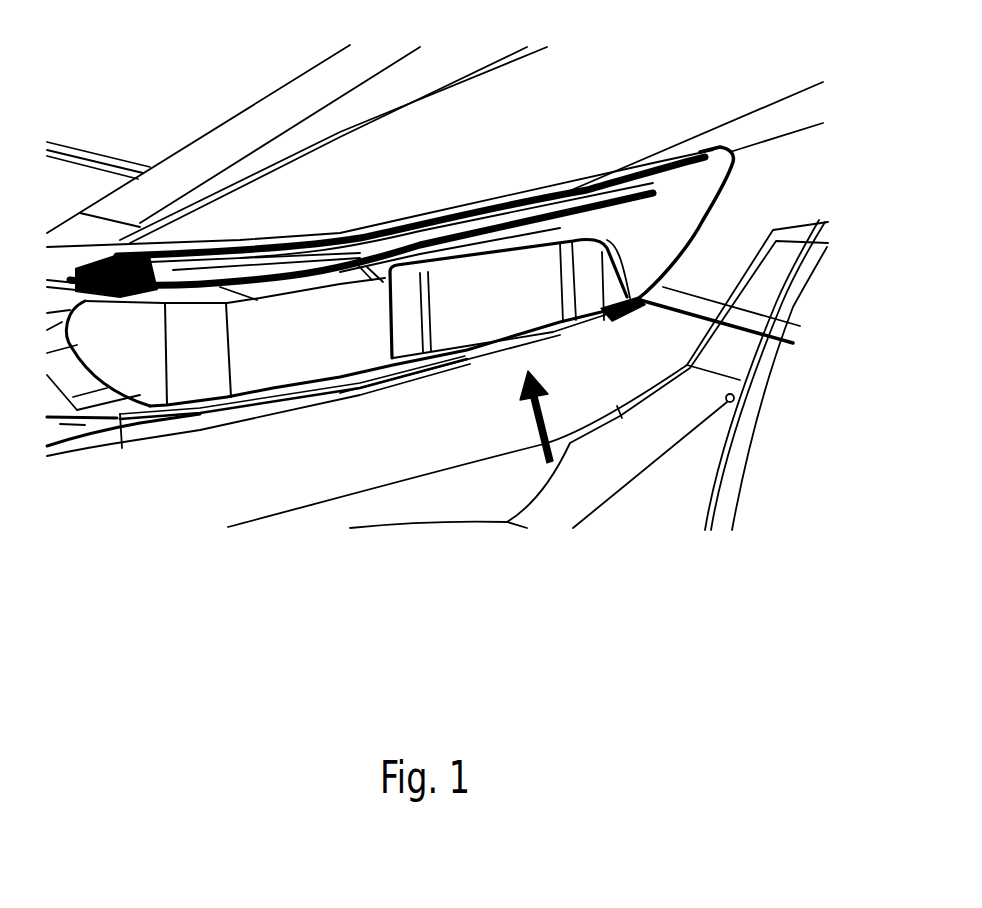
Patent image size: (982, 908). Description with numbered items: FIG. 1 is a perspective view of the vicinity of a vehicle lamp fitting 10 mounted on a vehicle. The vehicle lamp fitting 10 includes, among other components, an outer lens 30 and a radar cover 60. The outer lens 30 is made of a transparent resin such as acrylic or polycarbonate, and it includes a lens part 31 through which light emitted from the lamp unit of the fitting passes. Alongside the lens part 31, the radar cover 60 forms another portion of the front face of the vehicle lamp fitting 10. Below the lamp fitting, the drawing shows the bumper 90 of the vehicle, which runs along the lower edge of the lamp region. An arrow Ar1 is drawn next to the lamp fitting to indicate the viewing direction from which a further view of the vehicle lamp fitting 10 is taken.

The vehicle lamp fitting 10 is at (423, 271).
The outer lens 30 is at (348, 361).
The lens part 31 is at (333, 360).
The radar cover 60 is at (483, 323).
The bumper 90 is at (411, 512).
The arrow Ar1 is at (540, 424).